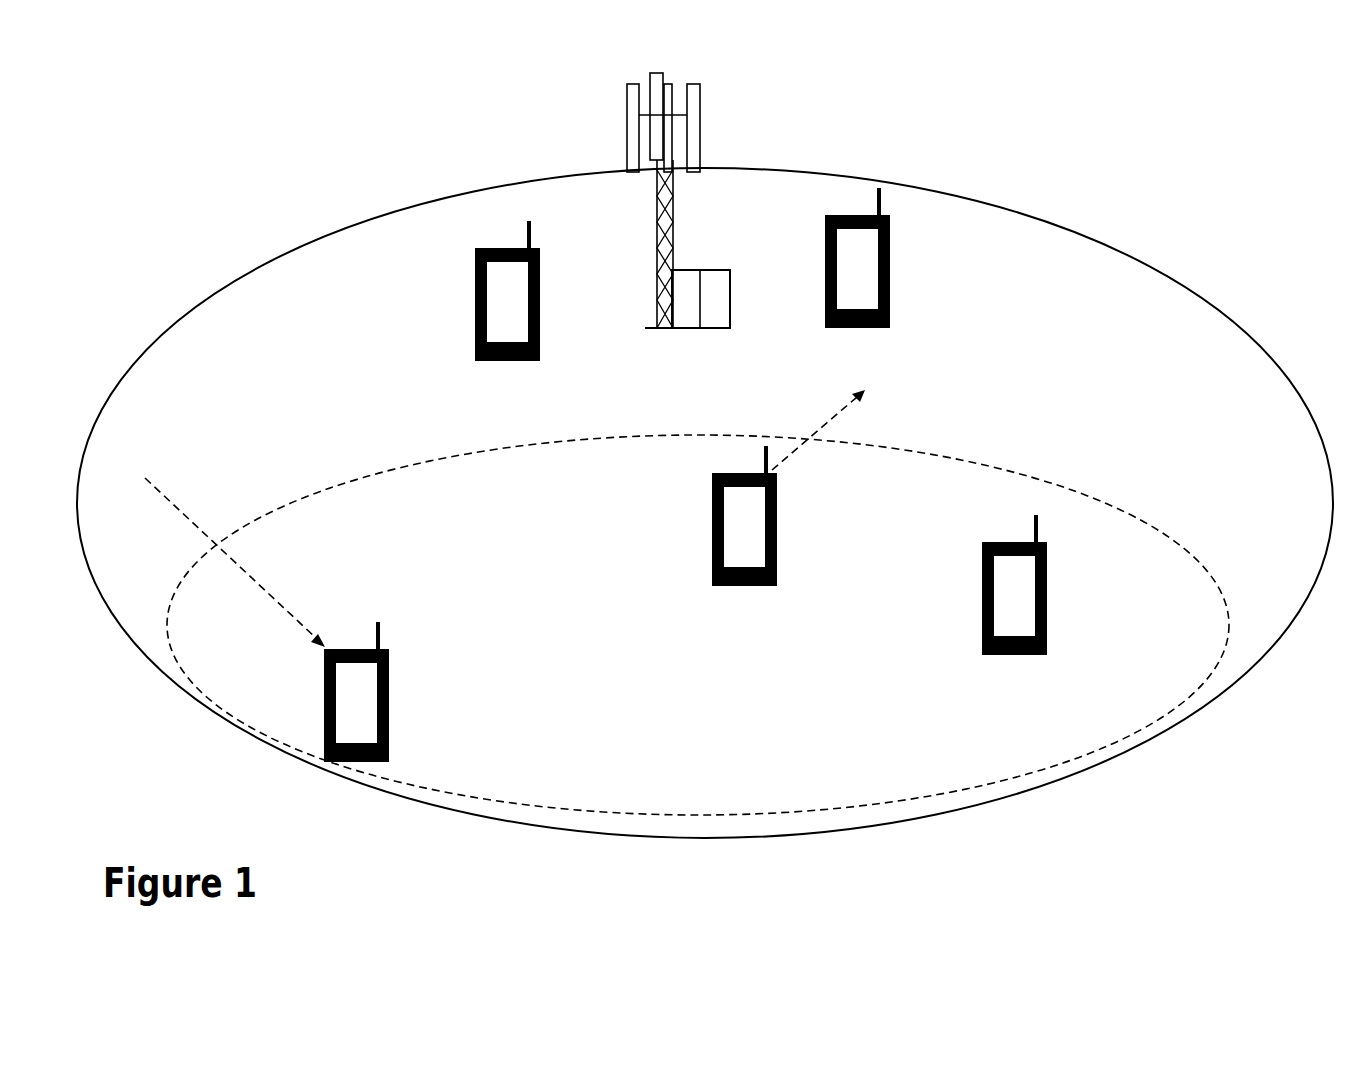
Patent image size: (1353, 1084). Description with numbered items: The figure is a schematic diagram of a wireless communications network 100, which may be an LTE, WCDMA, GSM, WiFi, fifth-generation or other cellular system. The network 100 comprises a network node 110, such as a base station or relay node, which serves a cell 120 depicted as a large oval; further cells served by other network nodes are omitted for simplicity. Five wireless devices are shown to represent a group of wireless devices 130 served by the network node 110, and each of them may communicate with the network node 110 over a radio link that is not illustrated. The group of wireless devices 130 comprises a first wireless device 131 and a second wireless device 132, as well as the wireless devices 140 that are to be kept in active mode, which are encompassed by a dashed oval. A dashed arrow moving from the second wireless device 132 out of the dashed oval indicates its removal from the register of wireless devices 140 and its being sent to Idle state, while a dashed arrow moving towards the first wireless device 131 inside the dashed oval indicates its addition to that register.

The wireless communications network 100 is at (705, 479).
The network node 110 is at (690, 328).
The cell 120 is at (252, 270).
The group of wireless devices 130 is at (540, 355).
The first wireless device 131 is at (388, 745).
The second wireless device 132 is at (777, 537).
The wireless devices to be kept in active mode 140 is at (778, 483).